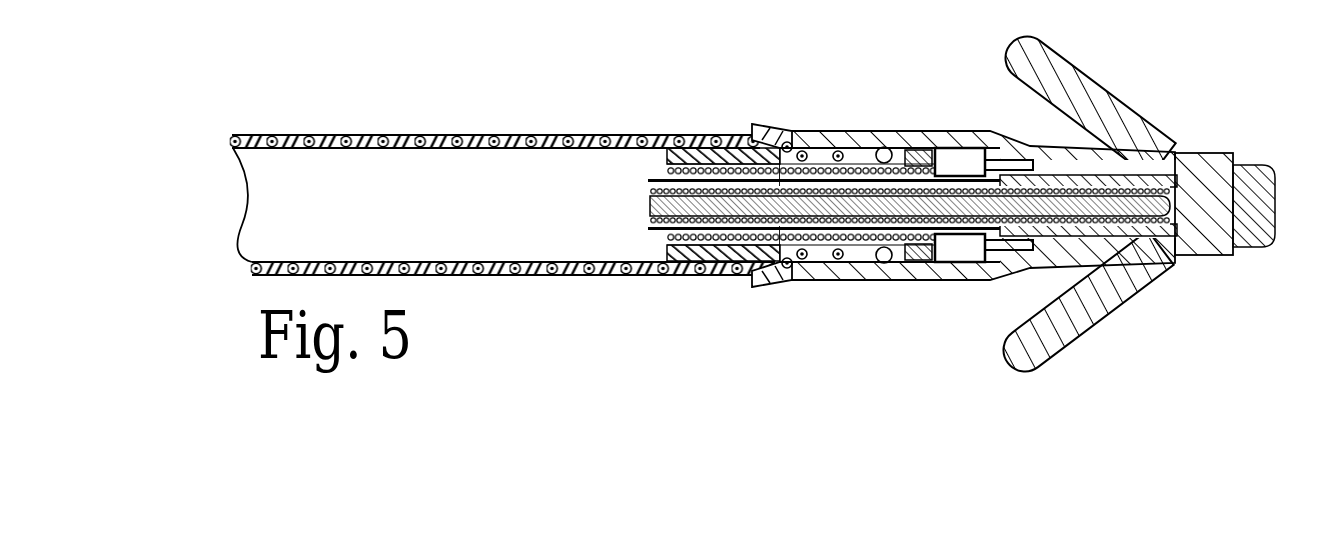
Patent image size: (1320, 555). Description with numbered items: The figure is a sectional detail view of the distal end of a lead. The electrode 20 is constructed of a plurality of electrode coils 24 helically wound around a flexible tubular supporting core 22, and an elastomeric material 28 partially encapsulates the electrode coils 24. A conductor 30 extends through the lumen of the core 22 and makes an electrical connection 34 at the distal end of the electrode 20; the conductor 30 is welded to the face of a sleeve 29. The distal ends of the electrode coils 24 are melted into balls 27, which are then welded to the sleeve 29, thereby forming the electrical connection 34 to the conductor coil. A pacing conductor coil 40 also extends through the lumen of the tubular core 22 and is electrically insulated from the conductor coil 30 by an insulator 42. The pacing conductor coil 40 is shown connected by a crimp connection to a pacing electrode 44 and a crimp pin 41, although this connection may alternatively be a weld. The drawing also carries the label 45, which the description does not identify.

The electrode 20 is at (450, 100).
The flexible tubular supporting core 22 is at (685, 140).
The electrode coils 24 is at (380, 136).
The balls 27 is at (905, 150).
The elastomeric material 28 is at (508, 136).
The sleeve 29 is at (940, 150).
The conductor 30 is at (700, 135).
The electrical connection 34 is at (805, 113).
The pacing conductor coil 40 is at (727, 225).
The crimp pin 41 is at (1180, 238).
The insulator 42 is at (975, 238).
The pacing electrode 44 is at (1265, 165).
The Y-arms 45 is at (1085, 78).